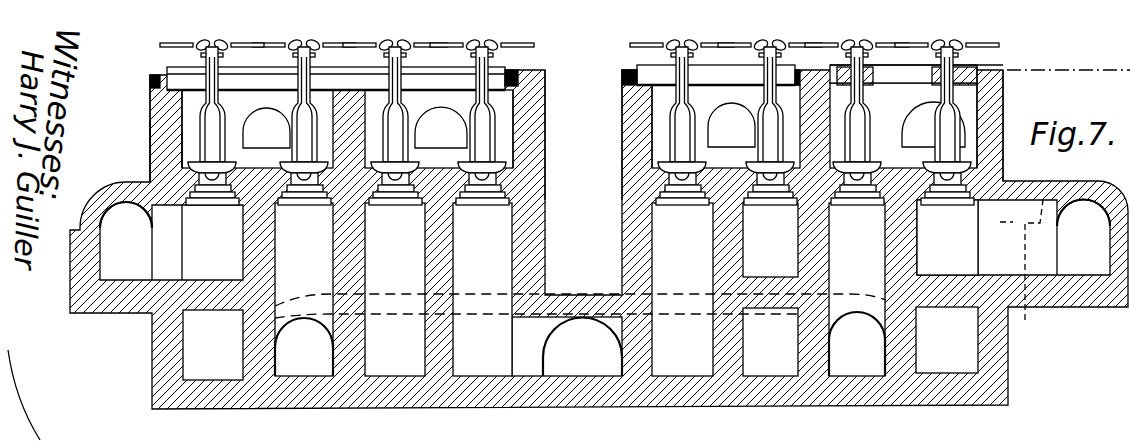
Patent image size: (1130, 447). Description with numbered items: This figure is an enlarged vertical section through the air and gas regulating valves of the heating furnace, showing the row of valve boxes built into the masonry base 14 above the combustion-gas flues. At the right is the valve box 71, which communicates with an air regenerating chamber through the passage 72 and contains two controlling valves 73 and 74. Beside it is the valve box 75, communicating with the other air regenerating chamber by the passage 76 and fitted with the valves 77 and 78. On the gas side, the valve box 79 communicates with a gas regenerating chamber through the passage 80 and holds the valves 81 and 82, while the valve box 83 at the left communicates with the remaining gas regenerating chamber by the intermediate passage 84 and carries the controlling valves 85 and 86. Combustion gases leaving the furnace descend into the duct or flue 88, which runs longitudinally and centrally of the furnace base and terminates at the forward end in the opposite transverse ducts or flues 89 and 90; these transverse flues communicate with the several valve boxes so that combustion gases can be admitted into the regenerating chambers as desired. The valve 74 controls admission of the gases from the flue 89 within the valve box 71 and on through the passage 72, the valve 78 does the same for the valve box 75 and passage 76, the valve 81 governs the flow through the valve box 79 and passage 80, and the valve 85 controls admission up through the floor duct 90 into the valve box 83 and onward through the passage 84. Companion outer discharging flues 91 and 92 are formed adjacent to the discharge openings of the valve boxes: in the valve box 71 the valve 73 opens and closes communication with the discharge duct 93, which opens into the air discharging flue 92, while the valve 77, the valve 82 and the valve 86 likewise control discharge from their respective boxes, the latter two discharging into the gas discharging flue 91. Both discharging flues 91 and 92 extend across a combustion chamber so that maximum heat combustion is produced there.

The valve body casting 14 is at (578, 392).
The valve box 71 is at (968, 97).
The passage 72 is at (927, 125).
The controlling valve 73 is at (945, 174).
The valve 74 is at (858, 174).
The valve box 75 is at (660, 115).
The passage 76 is at (720, 128).
The valve 77 is at (770, 174).
The valve 78 is at (682, 174).
The valve box 79 is at (503, 107).
The passage 80 is at (452, 110).
The valve 81 is at (483, 174).
The valve 82 is at (400, 174).
The valve box 83 is at (187, 105).
The intermediate passage 84 is at (252, 127).
The valve 85 is at (308, 174).
The valve 86 is at (187, 148).
The duct or flue 88 is at (567, 346).
The transverse duct or flue 89 is at (857, 344).
The transverse duct or flue 90 is at (304, 347).
The gas discharging flue 91 is at (171, 241).
The air discharging flue 92 is at (1013, 237).
The discharge duct 93 is at (997, 255).